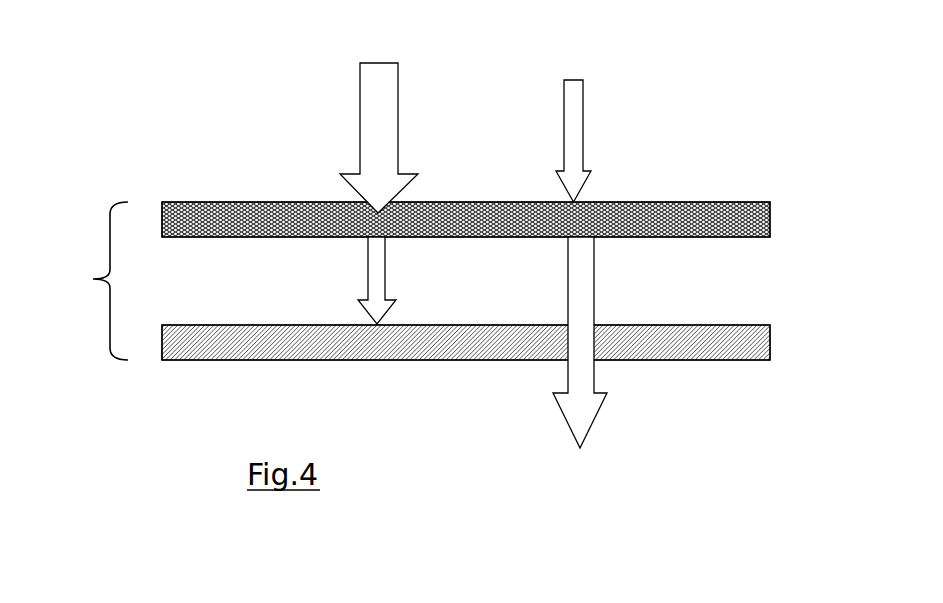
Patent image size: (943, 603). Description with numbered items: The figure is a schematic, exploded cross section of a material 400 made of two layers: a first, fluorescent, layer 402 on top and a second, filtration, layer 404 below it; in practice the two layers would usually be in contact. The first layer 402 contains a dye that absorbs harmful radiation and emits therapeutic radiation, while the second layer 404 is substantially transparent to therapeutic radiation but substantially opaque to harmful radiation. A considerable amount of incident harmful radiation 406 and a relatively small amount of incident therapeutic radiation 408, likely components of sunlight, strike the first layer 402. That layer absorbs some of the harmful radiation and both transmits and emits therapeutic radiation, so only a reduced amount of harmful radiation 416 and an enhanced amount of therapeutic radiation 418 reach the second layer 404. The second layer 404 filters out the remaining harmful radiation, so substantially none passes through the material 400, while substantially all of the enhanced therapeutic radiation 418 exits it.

The material 400 is at (431, 252).
The first fluorescent layer 402 is at (771, 211).
The second filtration layer 404 is at (770, 327).
The incident harmful radiation 406 is at (363, 122).
The incident therapeutic radiation 408 is at (583, 119).
The reduced amount of harmful radiation 416 is at (372, 276).
The enhanced amount of therapeutic radiation 418 is at (593, 288).